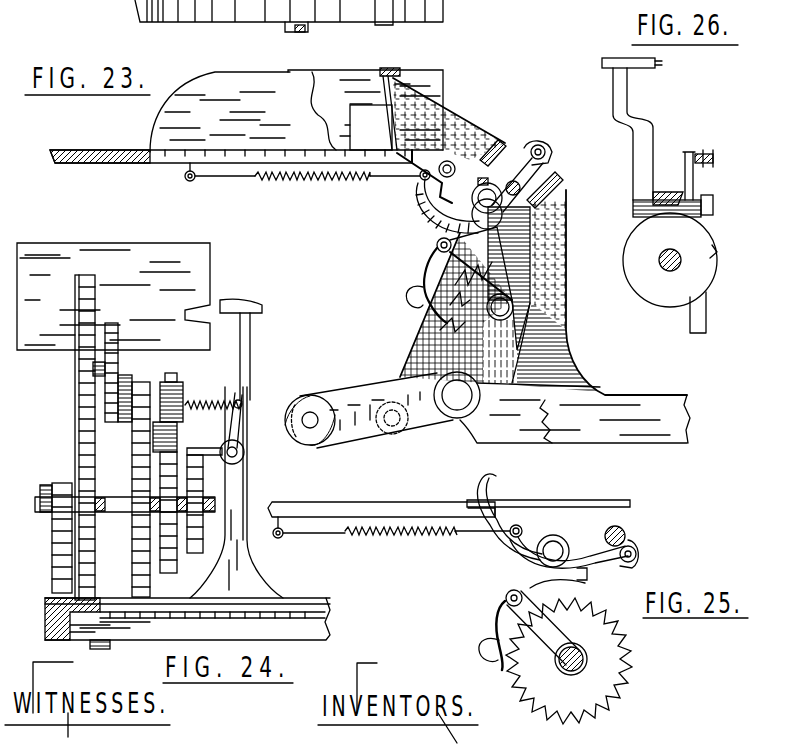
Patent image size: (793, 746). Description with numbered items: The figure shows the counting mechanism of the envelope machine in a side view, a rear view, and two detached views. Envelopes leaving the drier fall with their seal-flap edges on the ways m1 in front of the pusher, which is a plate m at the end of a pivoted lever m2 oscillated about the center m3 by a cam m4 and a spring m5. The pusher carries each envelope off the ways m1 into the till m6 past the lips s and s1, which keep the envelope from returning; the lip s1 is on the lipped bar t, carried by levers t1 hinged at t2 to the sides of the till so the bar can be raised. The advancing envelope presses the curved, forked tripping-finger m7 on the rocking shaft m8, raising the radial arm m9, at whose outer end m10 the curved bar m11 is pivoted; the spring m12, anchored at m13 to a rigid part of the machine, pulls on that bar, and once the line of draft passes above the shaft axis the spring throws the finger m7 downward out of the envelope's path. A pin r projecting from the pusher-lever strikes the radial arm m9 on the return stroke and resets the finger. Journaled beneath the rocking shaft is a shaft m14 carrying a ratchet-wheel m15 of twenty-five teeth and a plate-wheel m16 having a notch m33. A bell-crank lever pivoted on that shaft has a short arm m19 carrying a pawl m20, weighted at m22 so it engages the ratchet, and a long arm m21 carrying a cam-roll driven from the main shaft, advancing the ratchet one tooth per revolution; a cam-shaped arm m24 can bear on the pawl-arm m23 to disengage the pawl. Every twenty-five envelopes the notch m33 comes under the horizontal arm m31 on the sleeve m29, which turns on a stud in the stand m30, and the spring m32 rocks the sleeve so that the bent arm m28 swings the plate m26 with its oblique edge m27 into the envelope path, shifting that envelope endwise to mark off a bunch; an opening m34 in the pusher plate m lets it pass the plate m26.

In FIG. 23, the plate m is at (365, 102).
In FIG. 24, the plate m is at (113, 296).
In FIG. 23, the ways m1 is at (432, 152).
In FIG. 25, the ways m1 is at (600, 507).
In FIG. 23, the pivoted lever m2 is at (452, 128).
In FIG. 24, the pivoted lever m2 is at (75, 420).
In FIG. 23, the center m3 is at (457, 395).
In FIG. 23, the cam m4 is at (513, 188).
In FIG. 23, the spring m5 is at (592, 400).
In FIG. 23, the till m6 is at (220, 112).
In FIG. 23, the tripping-finger m7 is at (418, 210).
In FIG. 25, the tripping-finger m7 is at (494, 493).
In FIG. 23, the rocking shaft m8 is at (480, 193).
In FIG. 24, the rocking shaft m8 is at (135, 390).
In FIG. 25, the rocking shaft m8 is at (558, 540).
In FIG. 23, the radial arm m9 is at (520, 158).
In FIG. 24, the radial arm m9 is at (120, 345).
In FIG. 25, the radial arm m9 is at (634, 566).
In FIG. 23, the outer end of radial arm m10 is at (548, 146).
In FIG. 25, the outer end of radial arm m10 is at (645, 554).
In FIG. 23, the curved bar m11 is at (447, 206).
In FIG. 24, the curved bar m11 is at (114, 402).
In FIG. 25, the curved bar m11 is at (515, 556).
In FIG. 23, the spring m12 is at (312, 185).
In FIG. 25, the spring m12 is at (401, 541).
In FIG. 23, the spring attachment point m13 is at (188, 182).
In FIG. 25, the spring attachment point m13 is at (391, 534).
In FIG. 26, the shaft m14 is at (660, 252).
In FIG. 24, the shaft m14 is at (248, 495).
In FIG. 25, the shaft m14 is at (586, 655).
In FIG. 23, the ratchet-wheel m15 is at (438, 325).
In FIG. 24, the ratchet-wheel m15 is at (205, 578).
In FIG. 25, the ratchet-wheel m15 is at (604, 688).
In FIG. 26, the plate-wheel m16 is at (662, 285).
In FIG. 24, the plate-wheel m16 is at (200, 540).
In FIG. 23, the arm of bell-crank lever m19 is at (425, 280).
In FIG. 25, the arm of bell-crank lever m19 is at (550, 635).
In FIG. 23, the pawl m20 is at (428, 262).
In FIG. 25, the pawl m20 is at (507, 612).
In FIG. 23, the long arm m21 is at (395, 378).
In FIG. 23, the weight m22 is at (407, 295).
In FIG. 25, the weight m22 is at (479, 646).
In FIG. 23, the pawl-arm m23 is at (437, 246).
In FIG. 24, the pawl-arm m23 is at (158, 428).
In FIG. 25, the pawl-arm m23 is at (550, 579).
In FIG. 23, the cam-shaped arm m24 is at (538, 190).
In FIG. 24, the cam-shaped arm m24 is at (178, 385).
In FIG. 25, the cam-shaped arm m24 is at (597, 575).
In FIG. 26, the plate m26 is at (657, 63).
In FIG. 24, the plate m26 is at (252, 302).
In FIG. 26, the oblique edge m27 is at (607, 58).
In FIG. 26, the bent arm m28 is at (627, 95).
In FIG. 24, the bent arm m28 is at (252, 336).
In FIG. 26, the sleeve m29 is at (662, 196).
In FIG. 26, the stand m30 is at (706, 307).
In FIG. 24, the stand m30 is at (247, 560).
In FIG. 25, the stand m30 is at (274, 550).
In FIG. 26, the horizontal arm m31 is at (635, 214).
In FIG. 24, the horizontal arm m31 is at (200, 447).
In FIG. 26, the spring m32 is at (706, 152).
In FIG. 24, the spring m32 is at (212, 403).
In FIG. 26, the notch m33 is at (729, 253).
In FIG. 24, the notch m33 is at (203, 478).
In FIG. 24, the opening m34 is at (230, 292).
In FIG. 23, the pin r is at (438, 168).
In FIG. 24, the pin r is at (135, 375).
In FIG. 25, the pin r is at (625, 530).
In FIG. 23, the lip s is at (382, 145).
In FIG. 25, the lip s is at (465, 500).
In FIG. 23, the lip s1 is at (405, 68).
In FIG. 23, the lipped bar t is at (395, 25).
In FIG. 23, the levers t1 is at (345, 24).
In FIG. 23, the hinge t2 is at (295, 31).